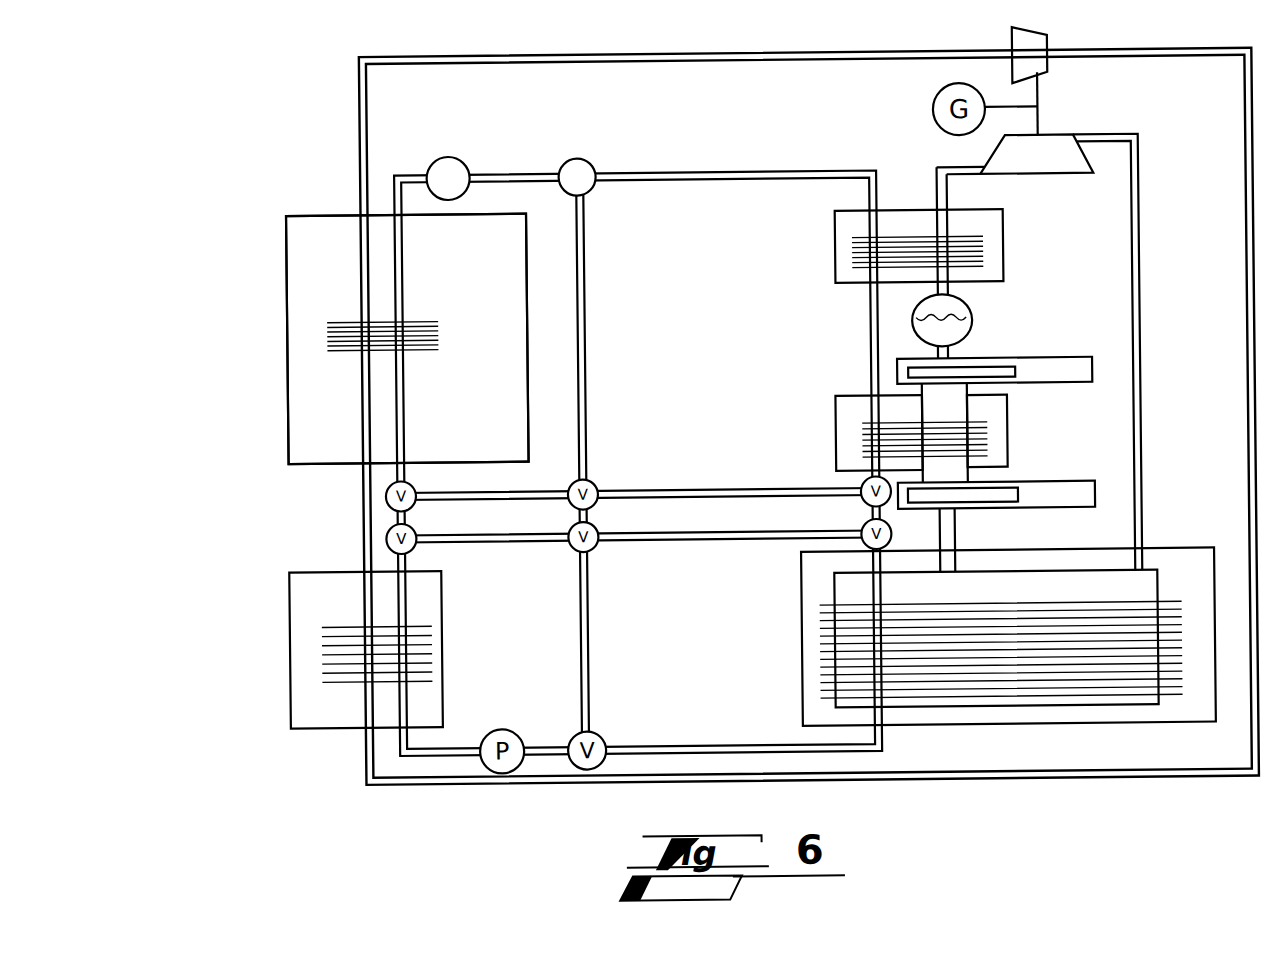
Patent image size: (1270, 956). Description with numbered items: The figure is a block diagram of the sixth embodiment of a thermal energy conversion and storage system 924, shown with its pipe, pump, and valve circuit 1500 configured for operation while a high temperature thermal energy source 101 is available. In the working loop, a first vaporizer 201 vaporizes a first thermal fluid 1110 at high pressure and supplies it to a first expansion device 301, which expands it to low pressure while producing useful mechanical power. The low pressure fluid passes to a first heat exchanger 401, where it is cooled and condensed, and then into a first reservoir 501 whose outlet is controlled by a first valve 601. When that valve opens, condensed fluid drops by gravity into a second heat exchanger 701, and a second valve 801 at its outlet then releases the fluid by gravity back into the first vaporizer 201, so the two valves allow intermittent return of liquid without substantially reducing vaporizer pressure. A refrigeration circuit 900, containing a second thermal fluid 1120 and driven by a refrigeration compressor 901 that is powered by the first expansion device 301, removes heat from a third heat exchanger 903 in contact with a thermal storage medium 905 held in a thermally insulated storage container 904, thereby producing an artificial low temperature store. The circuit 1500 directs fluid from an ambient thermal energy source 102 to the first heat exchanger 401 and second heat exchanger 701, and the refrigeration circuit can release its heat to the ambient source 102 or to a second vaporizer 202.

The refrigeration circuit 900 is at (1067, 785).
The second thermal fluid 1120 is at (1248, 109).
The thermal energy conversion system 924 is at (283, 174).
The thermally insulated storage container 904 is at (290, 266).
The thermal storage medium 905 is at (326, 435).
The third heat exchanger 903 is at (329, 329).
The ambient thermal energy source 102 is at (309, 597).
The second vaporizer 202 is at (288, 632).
The high temperature thermal energy source 101 is at (1192, 556).
The first vaporizer 201 is at (1170, 696).
The first heat exchanger 401 is at (1008, 254).
The second heat exchanger 701 is at (984, 448).
The first valve 601 is at (1061, 390).
The second valve 801 is at (1072, 488).
The first expansion device 301 is at (1062, 181).
The refrigeration compressor 901 is at (1051, 80).
The first reservoir 501 is at (970, 313).
The first thermal fluid 1110 is at (972, 331).
The pipe, pump, and valve circuit 1500 is at (739, 176).